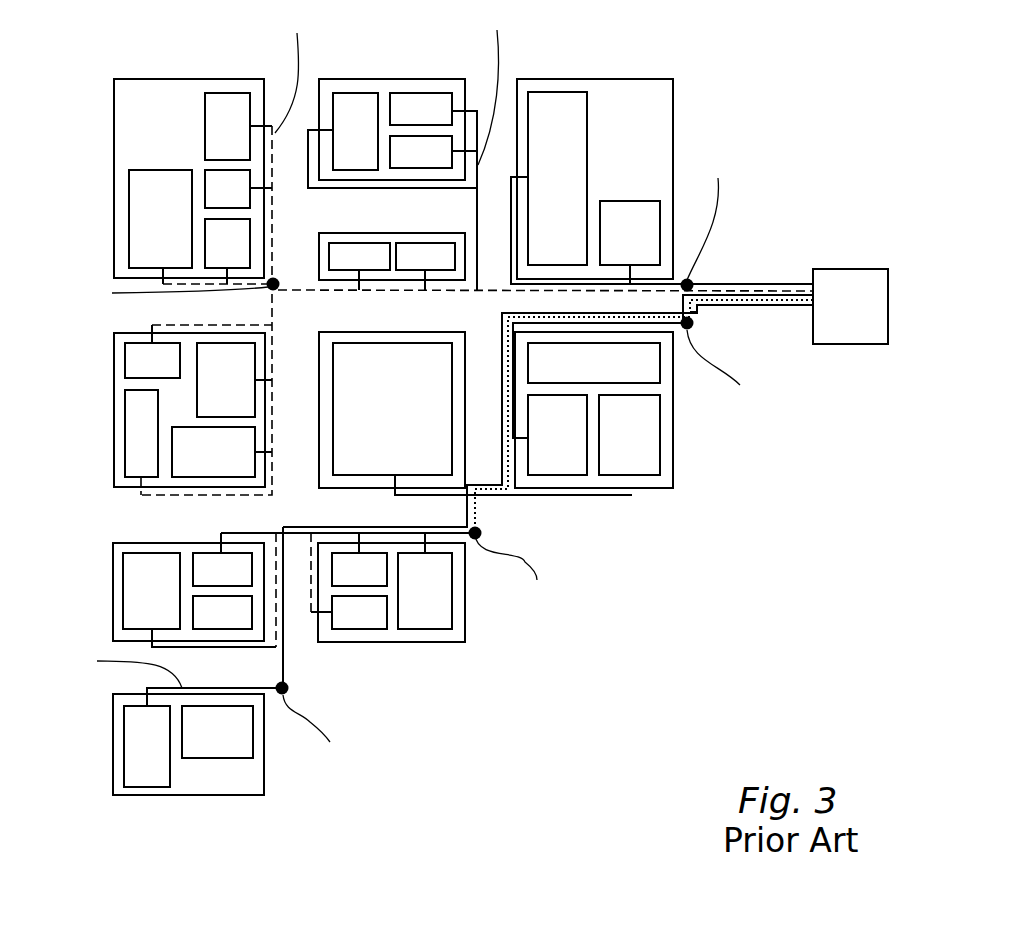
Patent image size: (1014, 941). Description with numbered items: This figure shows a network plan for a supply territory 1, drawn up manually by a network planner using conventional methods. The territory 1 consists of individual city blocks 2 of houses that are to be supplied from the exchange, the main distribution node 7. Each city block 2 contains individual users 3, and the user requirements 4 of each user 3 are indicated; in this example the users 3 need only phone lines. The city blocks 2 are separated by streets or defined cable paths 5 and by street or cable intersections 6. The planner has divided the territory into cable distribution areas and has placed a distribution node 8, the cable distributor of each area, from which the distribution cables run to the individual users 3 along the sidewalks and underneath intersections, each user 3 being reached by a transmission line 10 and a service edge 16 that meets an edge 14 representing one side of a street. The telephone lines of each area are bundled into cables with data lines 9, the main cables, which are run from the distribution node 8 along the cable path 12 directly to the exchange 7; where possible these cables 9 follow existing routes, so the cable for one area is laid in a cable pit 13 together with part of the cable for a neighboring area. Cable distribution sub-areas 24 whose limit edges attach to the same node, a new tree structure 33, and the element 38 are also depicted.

The supply territory 1 is at (703, 56).
The city block 2 is at (634, 98).
The user 3 is at (557, 132).
The user requirements 4 is at (720, 456).
The streets or defined cable path 5 is at (328, 126).
The street or cable intersection 6 is at (297, 306).
The main distribution node (HVK) or exchange 7 is at (857, 269).
The distribution nodes (cable distributors) 8 is at (390, 203).
The cables with data lines 9 is at (776, 357).
The transmission line to user 10 is at (452, 20).
The cable path to main distribution node 12 is at (776, 235).
The cable for area E laid in cable pit with part of cable for area D 13 is at (82, 512).
The edge representing one side of a street 14 is at (529, 485).
The service edge to user 16 is at (392, 478).
The cable distribution sub-areas whose limit edges are attached to the same node 24 is at (557, 178).
The new tree structure 33 is at (217, 732).
The component 38 is at (392, 410).